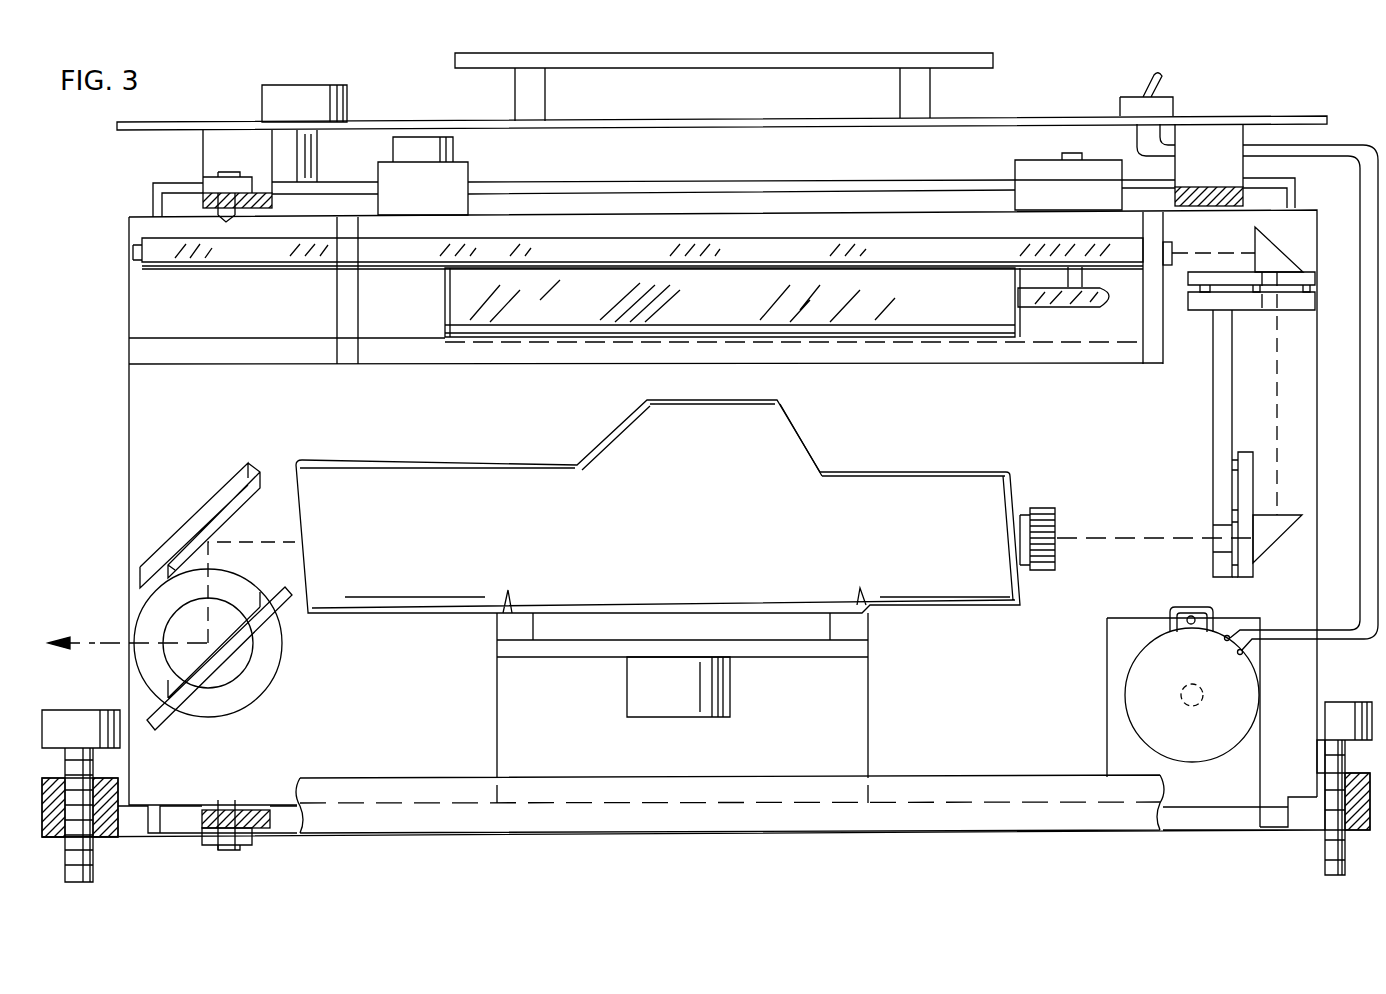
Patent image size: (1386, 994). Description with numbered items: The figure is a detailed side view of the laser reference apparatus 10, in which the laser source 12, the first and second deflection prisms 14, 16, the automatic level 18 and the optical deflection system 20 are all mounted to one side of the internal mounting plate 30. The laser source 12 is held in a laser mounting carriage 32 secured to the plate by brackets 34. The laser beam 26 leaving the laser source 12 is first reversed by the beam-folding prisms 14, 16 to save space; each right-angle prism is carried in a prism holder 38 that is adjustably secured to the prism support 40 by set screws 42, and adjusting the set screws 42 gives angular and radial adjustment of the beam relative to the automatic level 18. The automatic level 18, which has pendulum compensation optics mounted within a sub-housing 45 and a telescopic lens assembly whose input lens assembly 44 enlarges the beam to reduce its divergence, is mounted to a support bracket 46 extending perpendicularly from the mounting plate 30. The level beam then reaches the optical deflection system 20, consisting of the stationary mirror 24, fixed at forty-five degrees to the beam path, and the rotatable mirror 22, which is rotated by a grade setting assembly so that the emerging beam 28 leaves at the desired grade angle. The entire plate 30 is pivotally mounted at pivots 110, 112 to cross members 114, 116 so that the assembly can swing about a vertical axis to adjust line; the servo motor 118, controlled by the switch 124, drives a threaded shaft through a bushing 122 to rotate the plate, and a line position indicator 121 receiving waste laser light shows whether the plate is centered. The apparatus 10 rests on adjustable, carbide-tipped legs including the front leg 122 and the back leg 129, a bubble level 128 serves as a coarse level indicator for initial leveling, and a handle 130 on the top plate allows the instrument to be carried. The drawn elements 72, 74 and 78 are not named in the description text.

The laser reference apparatus 10 is at (968, 423).
The laser source 12 is at (890, 236).
The first deflection prism 14 is at (1275, 255).
The second deflection prism 16 is at (1283, 538).
The automatic level 18 is at (962, 607).
The optical deflection system 20 is at (272, 488).
The rotatable mirror 22 is at (150, 728).
The stationary mirror 24 is at (158, 556).
The laser beam 26 is at (1210, 265).
The emerging beam 28 is at (62, 636).
The internal mounting plate 30 is at (1318, 460).
The laser mounting carriage 32 is at (470, 365).
The brackets 34 is at (342, 338).
The prism holders 38 is at (1313, 280).
The prism support 40 is at (1213, 425).
The set screws 42 is at (1256, 294).
The input lens assembly 44 is at (1063, 493).
The sub-housing 45 is at (627, 700).
The support bracket 46 is at (802, 655).
The upper block 72 is at (306, 85).
The top plate 74 is at (1053, 117).
The support posts 78 is at (203, 158).
The pivot 110 is at (228, 810).
The pivot 112 is at (220, 212).
The cross member 114 is at (203, 200).
The cross member 116 is at (262, 830).
The servo motor 118 is at (1125, 705).
The line position indicator 121 is at (1015, 168).
The front leg 122 is at (93, 880).
The switch 124 is at (1173, 100).
The bubble level 128 is at (453, 150).
The back leg 129 is at (1325, 862).
The handle 130 is at (455, 58).